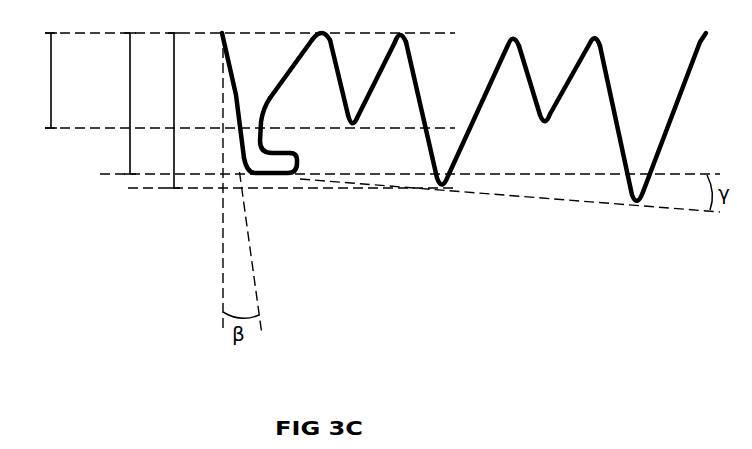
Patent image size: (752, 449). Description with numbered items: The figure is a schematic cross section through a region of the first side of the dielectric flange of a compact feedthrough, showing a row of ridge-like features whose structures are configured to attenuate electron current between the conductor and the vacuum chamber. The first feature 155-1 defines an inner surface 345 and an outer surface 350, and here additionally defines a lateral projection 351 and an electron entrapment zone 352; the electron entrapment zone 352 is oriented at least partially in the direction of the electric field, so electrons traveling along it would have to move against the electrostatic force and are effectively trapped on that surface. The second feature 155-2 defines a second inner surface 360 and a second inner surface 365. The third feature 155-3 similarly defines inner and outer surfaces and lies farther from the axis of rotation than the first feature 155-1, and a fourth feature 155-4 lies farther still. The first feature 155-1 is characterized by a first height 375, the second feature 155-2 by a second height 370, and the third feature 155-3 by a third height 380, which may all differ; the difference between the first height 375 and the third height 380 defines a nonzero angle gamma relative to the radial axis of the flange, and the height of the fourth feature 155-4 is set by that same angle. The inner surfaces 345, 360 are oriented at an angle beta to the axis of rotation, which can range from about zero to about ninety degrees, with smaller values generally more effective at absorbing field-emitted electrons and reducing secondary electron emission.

The second height 370 is at (56, 80).
The first height 375 is at (131, 103).
The third height 380 is at (177, 110).
The inner surface 345 is at (237, 82).
The outer surface 350 is at (306, 64).
The lateral projection 351 is at (311, 173).
The electron entrapment zone 352 is at (299, 138).
The second inner surface 360 is at (326, 86).
The second inner surface 365 is at (385, 85).
The first feature 155-1 is at (306, 148).
The second feature 155-2 is at (361, 132).
The third feature 155-3 is at (440, 191).
The fourth feature 155-4 is at (633, 208).